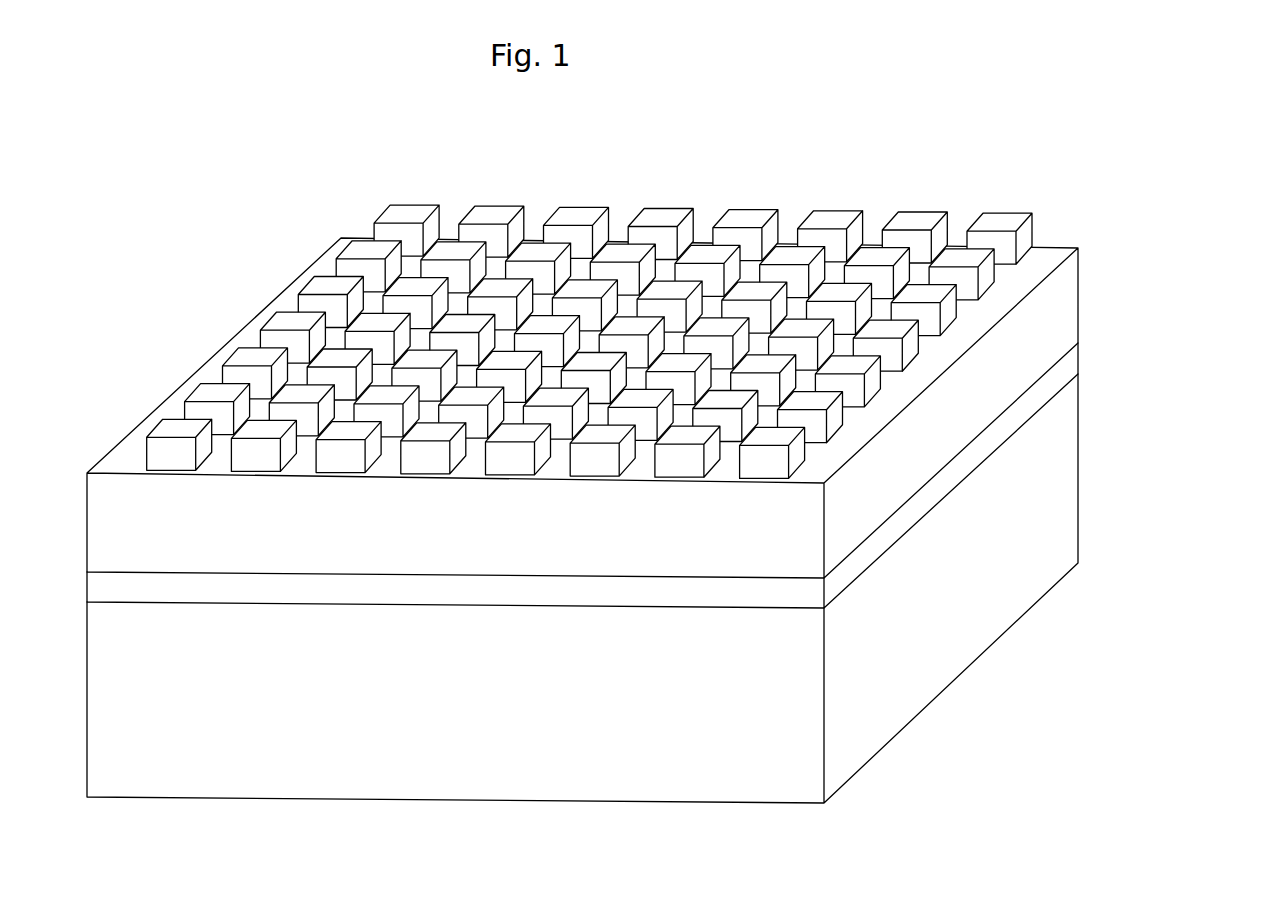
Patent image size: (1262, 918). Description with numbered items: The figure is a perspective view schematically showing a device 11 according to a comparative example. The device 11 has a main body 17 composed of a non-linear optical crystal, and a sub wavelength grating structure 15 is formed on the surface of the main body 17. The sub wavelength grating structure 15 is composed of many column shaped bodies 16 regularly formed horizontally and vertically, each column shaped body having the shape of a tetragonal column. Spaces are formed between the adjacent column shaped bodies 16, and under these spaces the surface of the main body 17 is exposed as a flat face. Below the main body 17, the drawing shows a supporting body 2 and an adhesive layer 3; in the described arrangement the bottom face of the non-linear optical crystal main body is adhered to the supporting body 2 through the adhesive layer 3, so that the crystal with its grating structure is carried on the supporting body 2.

The device 11 is at (1127, 229).
The supporting body 2 is at (1078, 487).
The adhesive layer 3 is at (1078, 365).
The main body 17 is at (1042, 258).
The sub wavelength grating structure 15 is at (1028, 185).
The column shaped bodies 16 is at (288, 320).